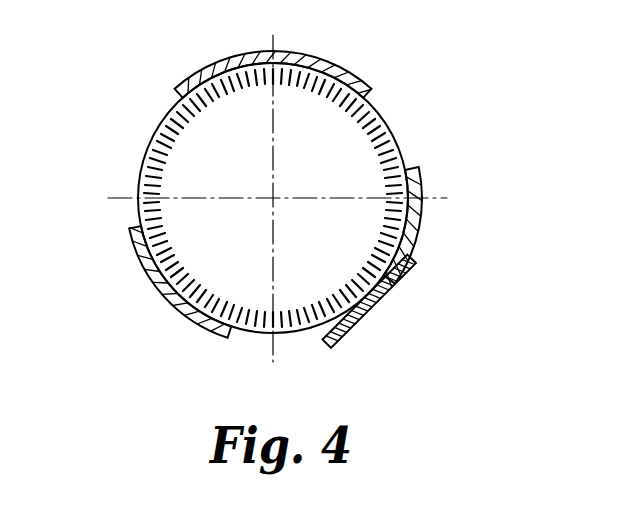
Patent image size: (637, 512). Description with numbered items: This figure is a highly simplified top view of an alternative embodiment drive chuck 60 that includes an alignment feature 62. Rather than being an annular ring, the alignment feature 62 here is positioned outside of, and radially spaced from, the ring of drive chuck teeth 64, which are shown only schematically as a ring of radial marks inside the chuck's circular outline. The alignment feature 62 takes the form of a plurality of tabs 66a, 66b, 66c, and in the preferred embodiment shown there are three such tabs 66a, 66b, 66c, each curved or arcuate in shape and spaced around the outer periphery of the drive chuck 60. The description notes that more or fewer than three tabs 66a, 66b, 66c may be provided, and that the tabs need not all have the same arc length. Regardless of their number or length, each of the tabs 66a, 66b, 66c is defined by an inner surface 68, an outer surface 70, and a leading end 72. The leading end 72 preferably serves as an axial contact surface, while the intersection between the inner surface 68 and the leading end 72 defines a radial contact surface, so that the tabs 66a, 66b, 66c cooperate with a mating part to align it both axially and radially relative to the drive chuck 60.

The drive chuck 60 is at (424, 77).
The alignment feature 62 is at (200, 58).
The drive chuck teeth 64 is at (166, 128).
The tab 66a is at (320, 62).
The tab 66b is at (412, 250).
The tab 66c is at (163, 300).
The inner surface 68 is at (380, 293).
The outer surface 70 is at (420, 223).
The leading end 72 is at (357, 320).